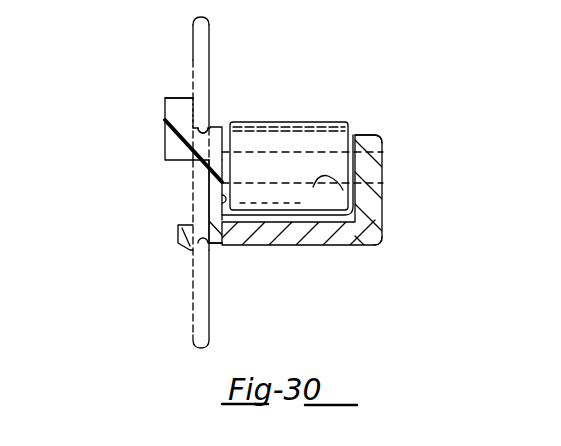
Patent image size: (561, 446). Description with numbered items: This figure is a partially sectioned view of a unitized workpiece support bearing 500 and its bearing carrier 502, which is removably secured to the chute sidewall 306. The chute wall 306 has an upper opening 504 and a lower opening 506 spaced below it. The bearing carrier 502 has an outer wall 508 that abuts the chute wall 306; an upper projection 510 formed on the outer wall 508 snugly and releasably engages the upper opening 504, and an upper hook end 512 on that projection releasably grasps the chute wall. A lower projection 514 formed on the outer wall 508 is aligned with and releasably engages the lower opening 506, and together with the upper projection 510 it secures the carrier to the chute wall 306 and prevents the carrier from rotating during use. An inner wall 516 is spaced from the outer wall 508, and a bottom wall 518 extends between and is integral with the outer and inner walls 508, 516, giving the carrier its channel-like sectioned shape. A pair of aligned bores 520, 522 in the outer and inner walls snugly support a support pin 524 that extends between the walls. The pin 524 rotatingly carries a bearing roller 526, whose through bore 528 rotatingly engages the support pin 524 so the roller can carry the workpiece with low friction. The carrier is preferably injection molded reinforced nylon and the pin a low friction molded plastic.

The chute sidewall 306 is at (193, 62).
The workpiece support bearing 500 is at (337, 120).
The bearing carrier 502 is at (341, 178).
The upper opening 504 is at (215, 128).
The lower opening 506 is at (212, 243).
The outer wall 508 is at (209, 190).
The upper projection 510 is at (165, 122).
The upper hook end 512 is at (193, 97).
The lower projection 514 is at (178, 232).
The inner wall 516 is at (380, 137).
The bottom wall 518 is at (290, 247).
The bore 520 is at (209, 168).
The bore 522 is at (383, 182).
The support pin 524 is at (383, 152).
The bearing roller 526 is at (327, 98).
The through bore 528 is at (382, 236).